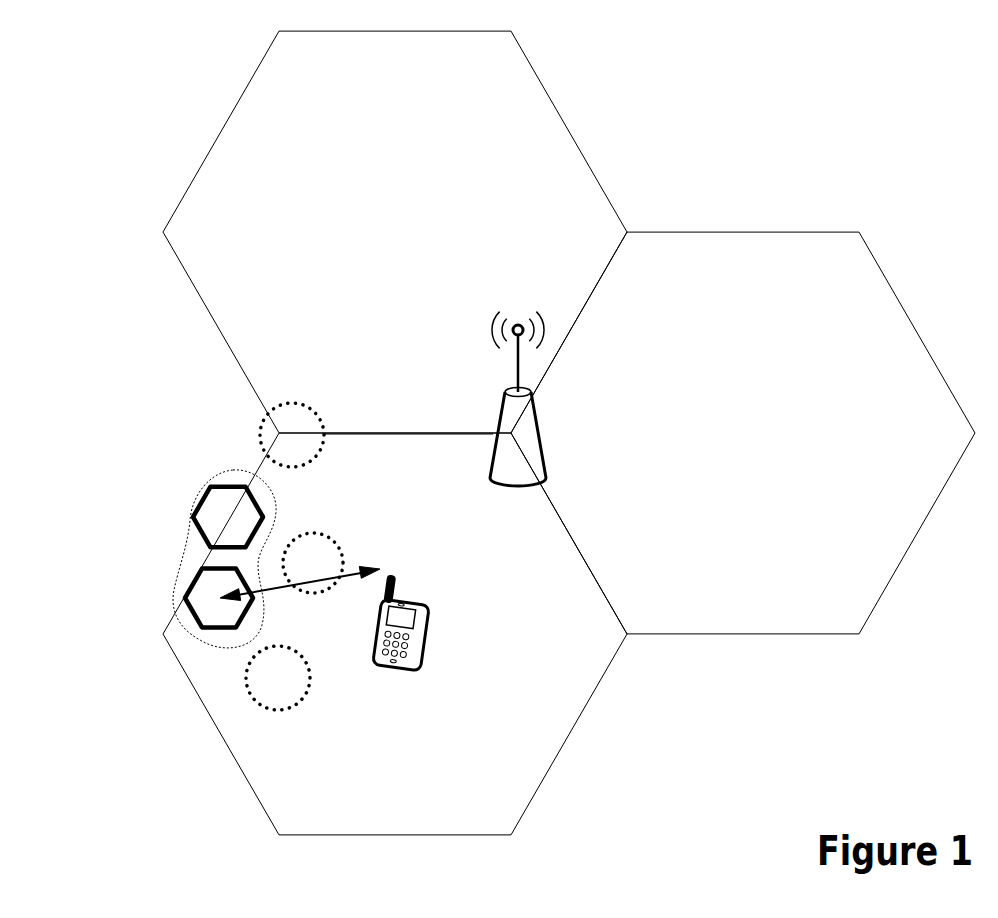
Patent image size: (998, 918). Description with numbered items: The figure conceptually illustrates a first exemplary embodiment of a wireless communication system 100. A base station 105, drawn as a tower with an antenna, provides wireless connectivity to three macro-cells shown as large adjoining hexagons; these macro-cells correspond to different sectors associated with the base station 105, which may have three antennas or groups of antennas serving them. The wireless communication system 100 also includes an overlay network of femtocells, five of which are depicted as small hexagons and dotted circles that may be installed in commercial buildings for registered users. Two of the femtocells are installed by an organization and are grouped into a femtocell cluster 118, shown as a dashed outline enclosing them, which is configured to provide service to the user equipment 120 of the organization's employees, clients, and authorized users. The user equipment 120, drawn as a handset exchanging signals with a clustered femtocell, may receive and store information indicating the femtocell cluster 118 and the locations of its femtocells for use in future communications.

The wireless communication system 100 is at (868, 108).
The base station 105 is at (543, 450).
The femtocell cluster 118 is at (230, 470).
The user equipment 120 is at (430, 635).